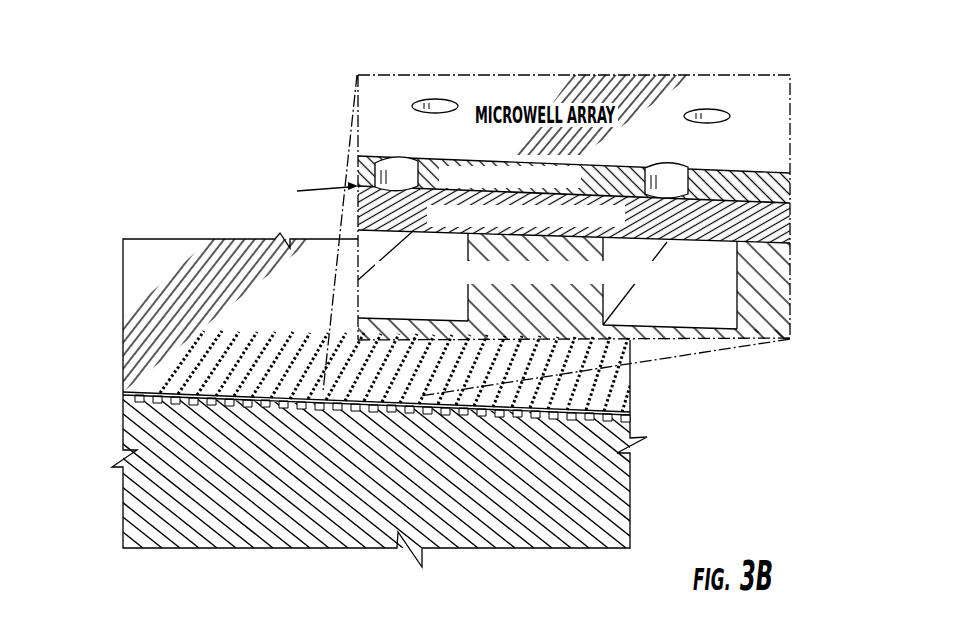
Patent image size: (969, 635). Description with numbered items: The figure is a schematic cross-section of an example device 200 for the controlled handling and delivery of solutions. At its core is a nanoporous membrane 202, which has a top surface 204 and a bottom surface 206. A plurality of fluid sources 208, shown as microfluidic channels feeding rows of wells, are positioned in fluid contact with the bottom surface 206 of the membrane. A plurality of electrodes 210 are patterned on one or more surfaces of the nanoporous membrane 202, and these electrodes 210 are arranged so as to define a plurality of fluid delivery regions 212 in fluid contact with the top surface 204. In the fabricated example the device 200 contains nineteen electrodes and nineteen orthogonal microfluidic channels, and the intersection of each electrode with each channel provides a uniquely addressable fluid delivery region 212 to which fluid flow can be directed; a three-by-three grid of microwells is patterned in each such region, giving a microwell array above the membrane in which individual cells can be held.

The device 200 is at (150, 190).
The nanoporous membrane 202 is at (390, 217).
The top surface 204 is at (607, 193).
The bottom surface 206 is at (412, 230).
The fluid sources 208 is at (287, 402).
The electrodes 210 is at (160, 393).
The fluid delivery regions 212 is at (417, 157).